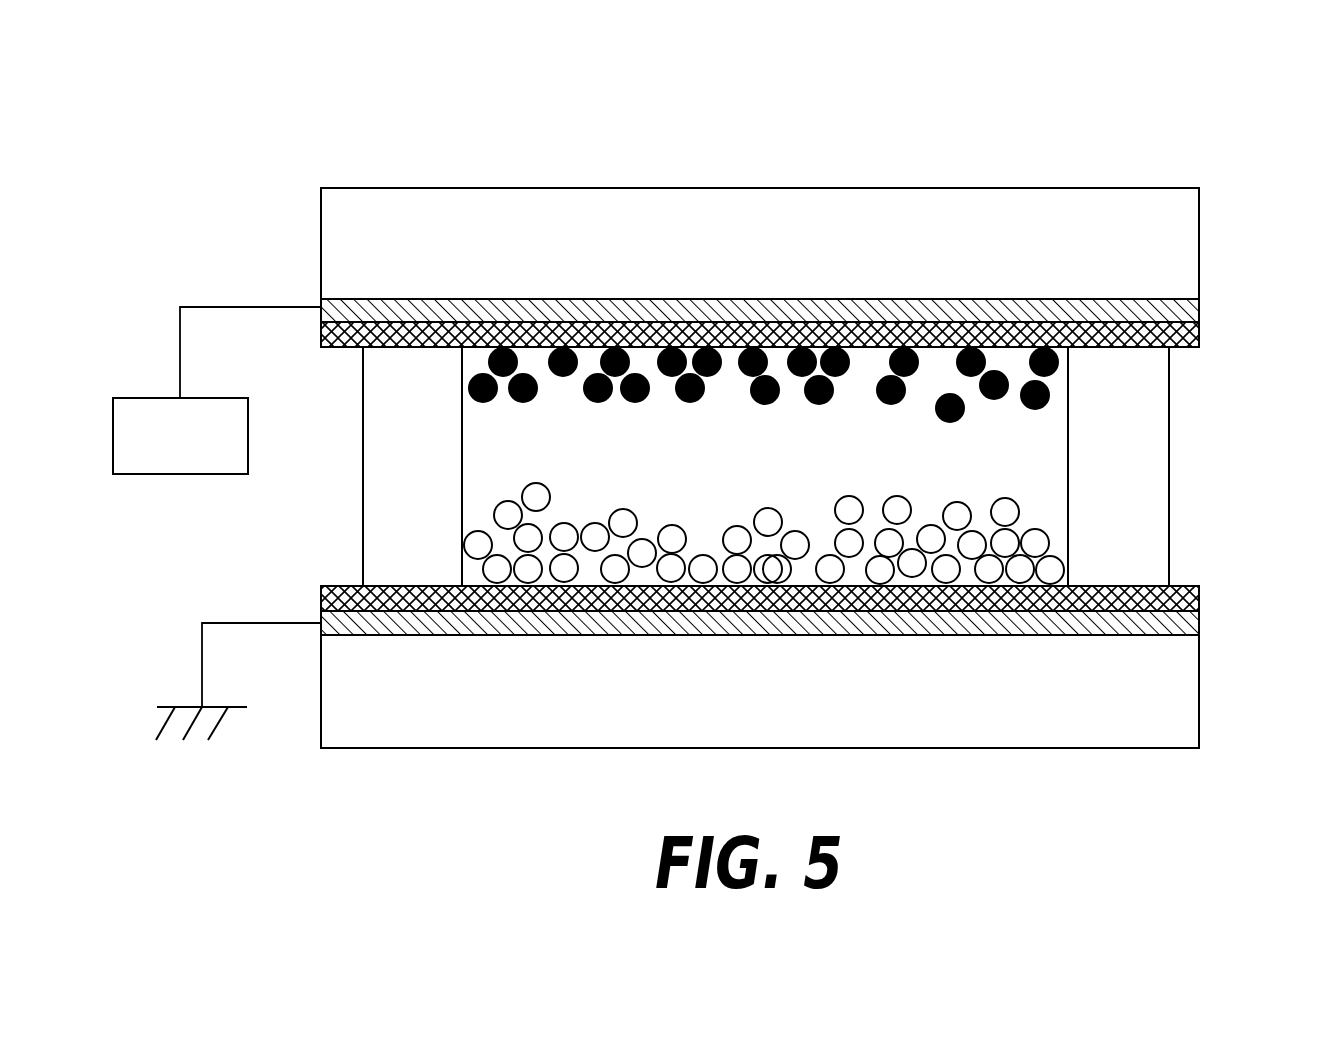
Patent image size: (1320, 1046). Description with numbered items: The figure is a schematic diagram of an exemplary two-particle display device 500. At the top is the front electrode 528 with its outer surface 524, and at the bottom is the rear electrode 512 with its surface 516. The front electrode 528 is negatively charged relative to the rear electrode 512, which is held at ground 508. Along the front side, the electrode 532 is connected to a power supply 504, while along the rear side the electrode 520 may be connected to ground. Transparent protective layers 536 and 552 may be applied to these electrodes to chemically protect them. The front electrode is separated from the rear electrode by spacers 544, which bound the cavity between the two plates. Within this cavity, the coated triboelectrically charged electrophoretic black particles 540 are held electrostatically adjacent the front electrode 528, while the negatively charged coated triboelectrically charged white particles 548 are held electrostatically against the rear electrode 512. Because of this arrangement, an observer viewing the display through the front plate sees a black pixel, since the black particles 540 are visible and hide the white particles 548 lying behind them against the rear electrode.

The electrophoretic display element 500 is at (483, 138).
The power supply 504 is at (210, 398).
The ground 508 is at (178, 691).
The rear electrode 512 is at (904, 730).
The surface 516 is at (1043, 750).
The electrode 520 is at (1185, 628).
The outer surface 524 is at (828, 188).
The front electrode 528 is at (990, 212).
The electrode 532 is at (1180, 312).
The transparent protective layer 536 is at (1198, 344).
The black particles 540 is at (1050, 402).
The spacers 544 is at (1163, 462).
The white particles 548 is at (1043, 543).
The transparent protective layer 552 is at (1195, 595).